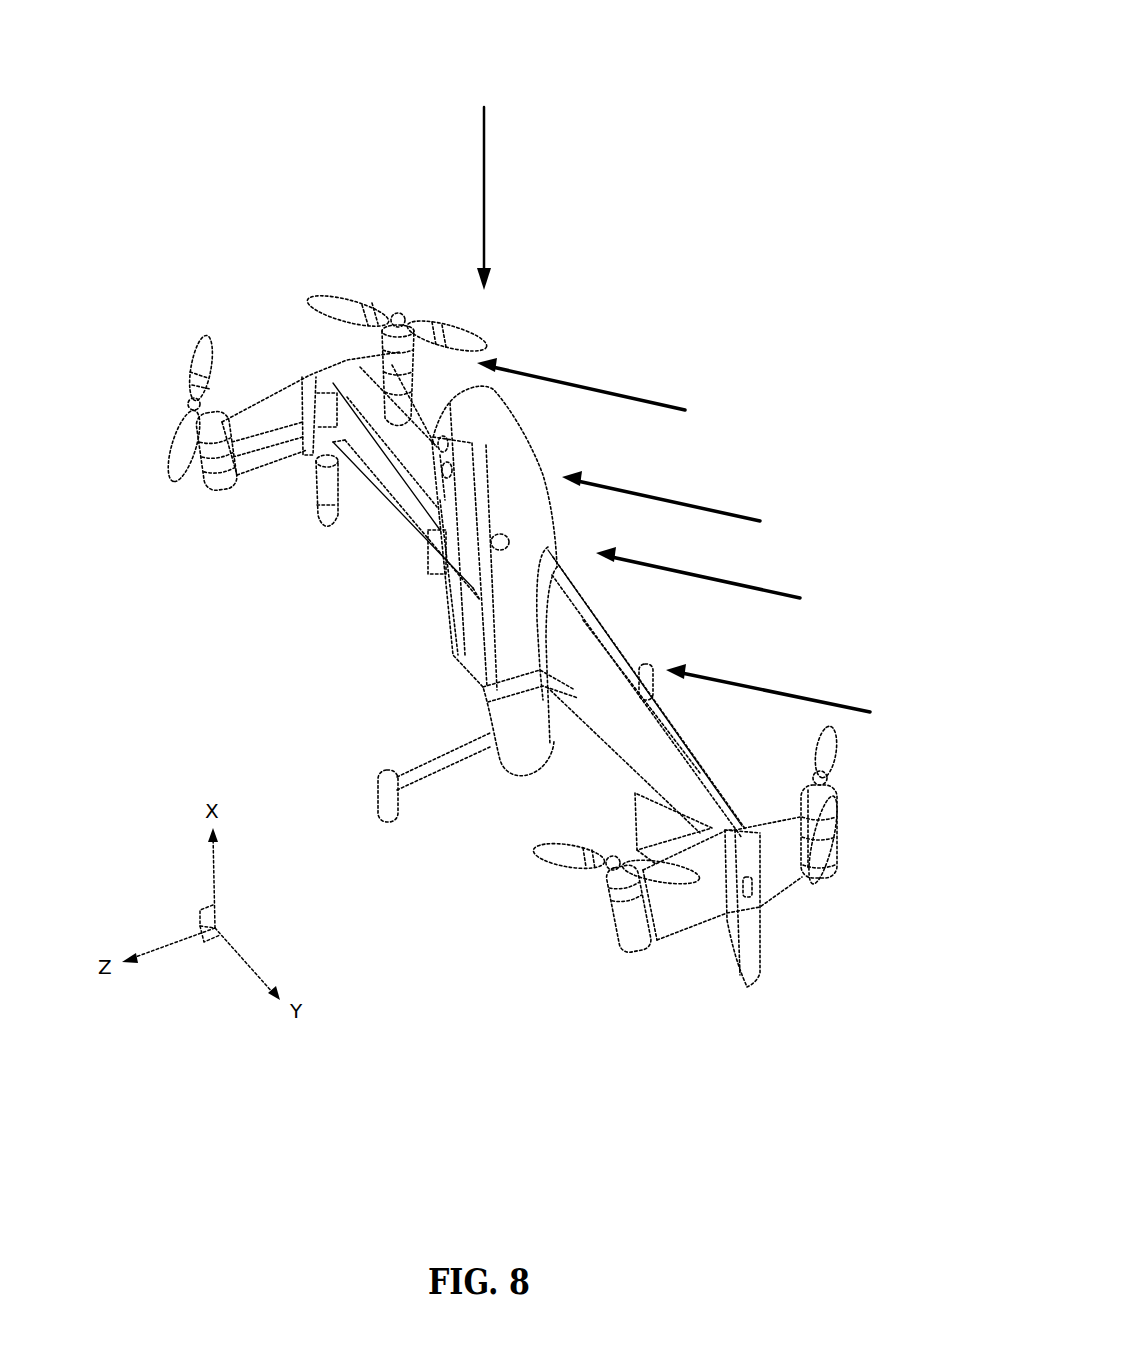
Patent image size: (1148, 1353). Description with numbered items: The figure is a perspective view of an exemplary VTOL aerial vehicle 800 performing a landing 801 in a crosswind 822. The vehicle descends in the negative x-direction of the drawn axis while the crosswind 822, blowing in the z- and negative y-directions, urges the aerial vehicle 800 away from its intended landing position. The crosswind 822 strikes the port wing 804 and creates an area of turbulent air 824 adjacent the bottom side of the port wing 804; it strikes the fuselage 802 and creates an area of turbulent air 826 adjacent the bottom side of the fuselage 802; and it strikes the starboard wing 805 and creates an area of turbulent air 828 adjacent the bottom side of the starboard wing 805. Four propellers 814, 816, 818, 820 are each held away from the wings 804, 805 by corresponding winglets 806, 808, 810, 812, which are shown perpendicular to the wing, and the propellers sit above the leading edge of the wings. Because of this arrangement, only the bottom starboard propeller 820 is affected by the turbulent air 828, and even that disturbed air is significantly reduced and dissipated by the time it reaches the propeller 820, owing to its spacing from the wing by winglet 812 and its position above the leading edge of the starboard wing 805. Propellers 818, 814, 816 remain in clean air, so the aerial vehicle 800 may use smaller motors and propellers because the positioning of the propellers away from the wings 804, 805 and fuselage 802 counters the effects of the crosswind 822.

The VTOL aerial vehicle 800 is at (812, 64).
The landing 801 is at (484, 178).
The fuselage 802 is at (517, 450).
The port wing 804 is at (613, 670).
The starboard wing 805 is at (413, 450).
The winglet 806 is at (780, 880).
The winglet 808 is at (697, 900).
The winglet 810 is at (357, 377).
The winglet 812 is at (263, 407).
The propeller 814 is at (827, 745).
The propeller 816 is at (557, 860).
The propeller 818 is at (330, 303).
The bottom starboard propeller 820 is at (176, 476).
The crosswind 822 is at (832, 700).
The area of turbulent air 824 is at (629, 829).
The area of turbulent air 826 is at (361, 466).
The area of turbulent air 828 is at (406, 525).